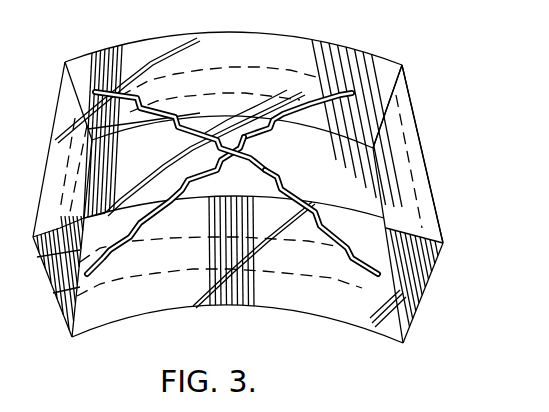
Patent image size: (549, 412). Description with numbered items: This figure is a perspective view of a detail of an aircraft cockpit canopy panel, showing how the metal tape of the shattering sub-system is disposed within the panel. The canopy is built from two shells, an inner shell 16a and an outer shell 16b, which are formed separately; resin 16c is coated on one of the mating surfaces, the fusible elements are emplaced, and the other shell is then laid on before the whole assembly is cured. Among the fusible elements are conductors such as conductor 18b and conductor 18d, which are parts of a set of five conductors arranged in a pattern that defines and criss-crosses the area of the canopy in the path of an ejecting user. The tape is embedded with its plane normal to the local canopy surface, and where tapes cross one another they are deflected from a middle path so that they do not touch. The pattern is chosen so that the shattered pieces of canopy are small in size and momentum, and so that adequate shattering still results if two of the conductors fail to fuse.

The inner canopy shell 16a is at (74, 292).
The outer canopy shell 16b is at (428, 154).
The resin 16c is at (430, 277).
The conductor 18b is at (165, 244).
The conductor 18d is at (321, 261).